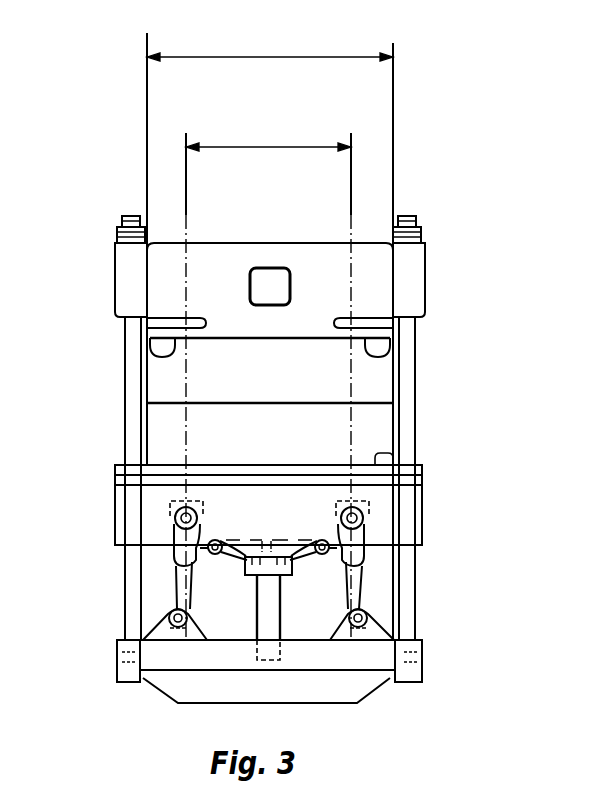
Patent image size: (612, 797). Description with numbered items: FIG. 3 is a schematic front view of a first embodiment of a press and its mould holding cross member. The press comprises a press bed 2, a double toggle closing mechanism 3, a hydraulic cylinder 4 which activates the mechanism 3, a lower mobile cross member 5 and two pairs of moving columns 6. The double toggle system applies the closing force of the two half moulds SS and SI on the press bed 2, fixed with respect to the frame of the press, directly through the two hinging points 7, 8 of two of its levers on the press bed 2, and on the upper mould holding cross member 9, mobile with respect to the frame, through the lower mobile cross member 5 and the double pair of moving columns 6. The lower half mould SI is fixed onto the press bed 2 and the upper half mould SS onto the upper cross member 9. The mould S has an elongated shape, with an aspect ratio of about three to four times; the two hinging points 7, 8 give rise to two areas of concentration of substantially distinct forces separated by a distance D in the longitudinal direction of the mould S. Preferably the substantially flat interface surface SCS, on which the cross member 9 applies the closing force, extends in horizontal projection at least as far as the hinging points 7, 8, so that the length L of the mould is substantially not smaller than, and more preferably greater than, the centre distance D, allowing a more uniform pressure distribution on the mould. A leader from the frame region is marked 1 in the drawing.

The container handling frame 1 is at (390, 458).
The press bed 2 is at (422, 512).
The double toggle closing mechanism 3 is at (178, 591).
The hydraulic cylinder 4 is at (257, 607).
The lower mobile cross member 5 is at (380, 695).
The moving columns 6 is at (125, 437).
The hinging point 7 is at (175, 513).
The hinging point 8 is at (366, 523).
The upper mould holding cross member 9 is at (423, 283).
The interface surface SCS is at (172, 350).
The lower half mould SI is at (158, 418).
The upper half mould SS is at (383, 365).
The mould S is at (516, 345).
The length of the mould L is at (277, 56).
The centre distance D is at (273, 148).